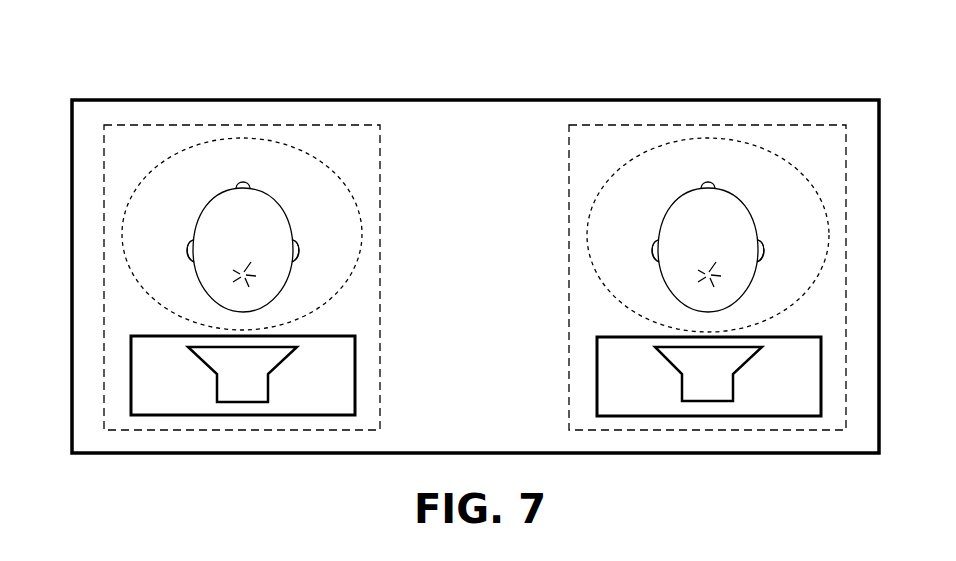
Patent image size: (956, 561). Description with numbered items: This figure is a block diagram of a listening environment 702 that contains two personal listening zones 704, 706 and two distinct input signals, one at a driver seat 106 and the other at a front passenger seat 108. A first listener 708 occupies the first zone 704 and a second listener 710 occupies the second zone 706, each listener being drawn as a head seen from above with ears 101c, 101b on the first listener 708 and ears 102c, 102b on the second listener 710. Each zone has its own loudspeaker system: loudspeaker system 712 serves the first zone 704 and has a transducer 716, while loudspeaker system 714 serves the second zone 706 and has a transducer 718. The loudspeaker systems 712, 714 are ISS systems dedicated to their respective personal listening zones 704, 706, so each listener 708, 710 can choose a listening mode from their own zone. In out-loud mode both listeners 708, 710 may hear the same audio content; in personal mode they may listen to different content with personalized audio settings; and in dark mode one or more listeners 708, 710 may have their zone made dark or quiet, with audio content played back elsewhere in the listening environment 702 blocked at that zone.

The listening environment 702 is at (430, 97).
The first zone 704 is at (155, 166).
The second zone 706 is at (798, 167).
The driver seat 106 is at (101, 334).
The front passenger seat 108 is at (849, 334).
The first listener 708 is at (254, 186).
The second listener 710 is at (721, 186).
The first occupant left ear 101c is at (184, 238).
The first occupant right ear 101b is at (300, 236).
The second occupant left ear 102c is at (649, 240).
The second occupant right ear 102b is at (765, 233).
The loudspeaker system 712 is at (130, 388).
The transducer 716 is at (214, 390).
The loudspeaker system 714 is at (823, 390).
The transducer 718 is at (737, 390).